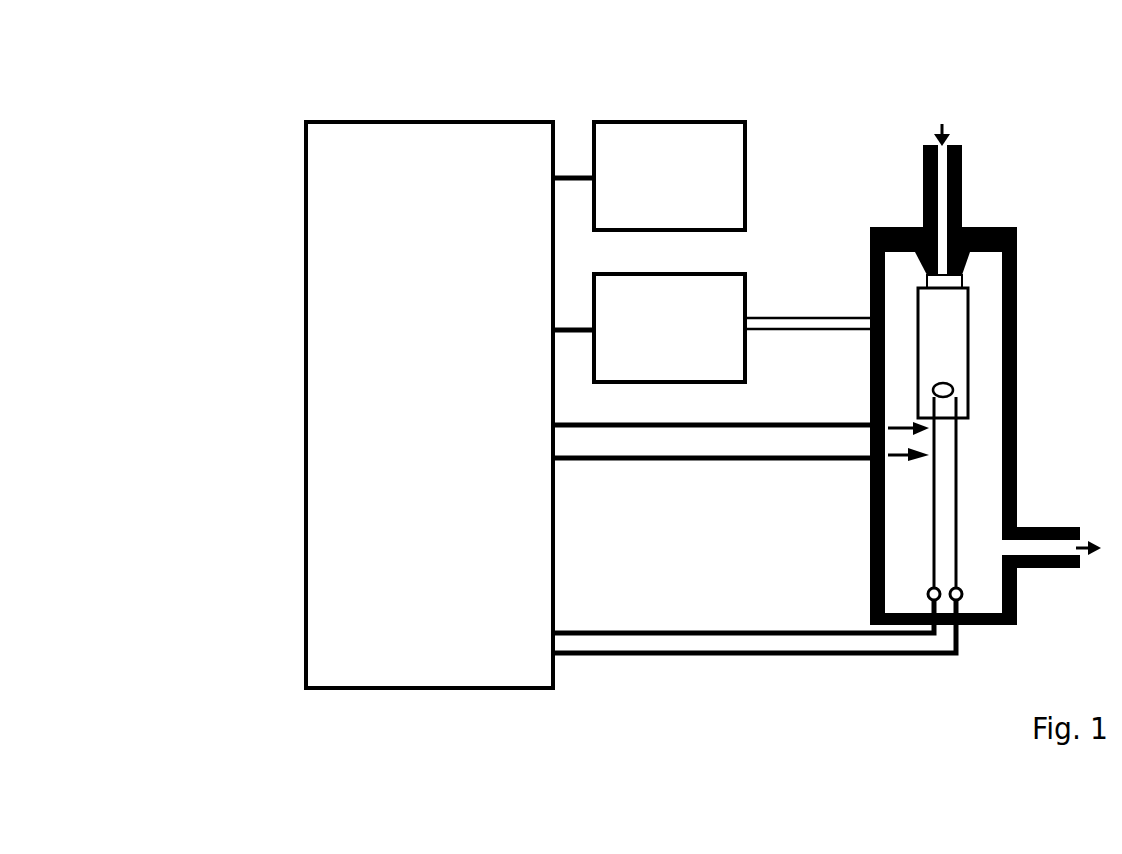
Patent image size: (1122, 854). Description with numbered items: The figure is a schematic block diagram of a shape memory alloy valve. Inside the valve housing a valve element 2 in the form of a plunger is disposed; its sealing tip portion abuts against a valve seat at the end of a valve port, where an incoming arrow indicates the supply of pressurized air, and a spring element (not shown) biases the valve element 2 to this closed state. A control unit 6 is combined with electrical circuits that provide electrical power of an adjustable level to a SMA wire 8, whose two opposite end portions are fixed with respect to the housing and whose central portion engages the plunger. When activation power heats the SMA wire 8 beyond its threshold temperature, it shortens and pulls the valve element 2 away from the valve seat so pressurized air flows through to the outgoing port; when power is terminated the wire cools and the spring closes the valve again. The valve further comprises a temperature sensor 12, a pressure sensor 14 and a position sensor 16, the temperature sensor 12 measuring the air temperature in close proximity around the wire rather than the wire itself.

The valve element 2 is at (968, 328).
The control unit 6 is at (306, 442).
The SMA wire 8 is at (958, 486).
The temperature sensor 12 is at (652, 122).
The pressure sensor 14 is at (748, 297).
The position sensor 16 is at (912, 432).